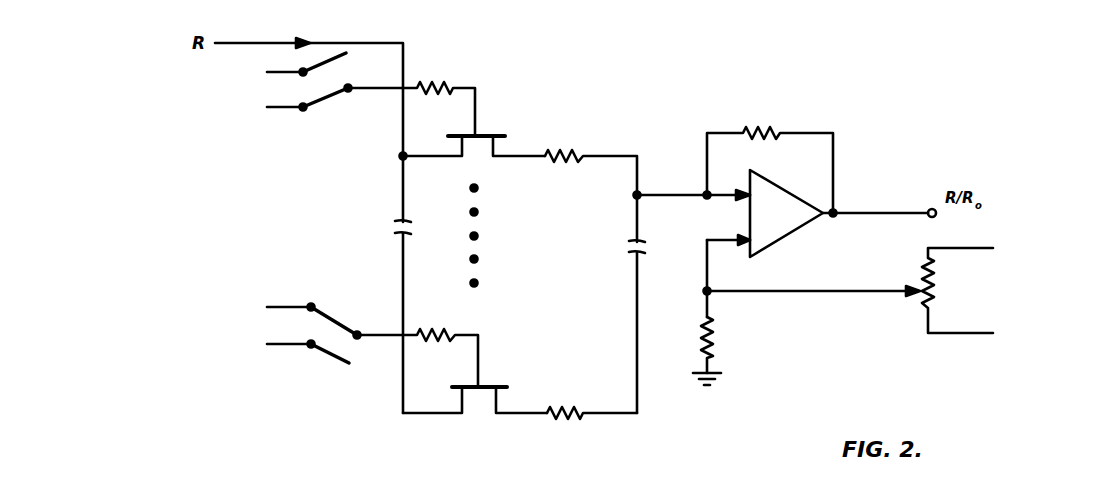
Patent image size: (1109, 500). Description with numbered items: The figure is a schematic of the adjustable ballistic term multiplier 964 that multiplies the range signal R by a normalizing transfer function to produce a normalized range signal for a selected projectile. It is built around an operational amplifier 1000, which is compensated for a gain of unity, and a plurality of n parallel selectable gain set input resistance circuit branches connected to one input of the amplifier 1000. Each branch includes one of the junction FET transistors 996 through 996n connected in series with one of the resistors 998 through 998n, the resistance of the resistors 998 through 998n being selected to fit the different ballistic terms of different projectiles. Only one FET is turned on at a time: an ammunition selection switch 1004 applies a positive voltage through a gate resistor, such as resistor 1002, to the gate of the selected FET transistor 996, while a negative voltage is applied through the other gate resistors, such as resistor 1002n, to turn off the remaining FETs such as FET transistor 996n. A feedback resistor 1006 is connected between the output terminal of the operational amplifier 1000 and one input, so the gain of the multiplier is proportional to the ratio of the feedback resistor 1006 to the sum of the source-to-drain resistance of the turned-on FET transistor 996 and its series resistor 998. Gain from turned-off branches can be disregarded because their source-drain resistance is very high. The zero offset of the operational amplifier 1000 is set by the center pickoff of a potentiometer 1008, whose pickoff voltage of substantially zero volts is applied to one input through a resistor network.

The amplifier stage 964 is at (589, 95).
The junction FET transistor 996 is at (490, 384).
The junction FET transistor 996n is at (490, 134).
The resistor 998 is at (570, 404).
The resistor 998n is at (570, 150).
The operational amplifier 1000 is at (795, 195).
The resistor 1002 is at (446, 330).
The resistor 1002n is at (445, 82).
The ammunition selection switch 1004 is at (250, 332).
The feedback resistor 1006 is at (758, 130).
The potentiometer 1008 is at (912, 300).